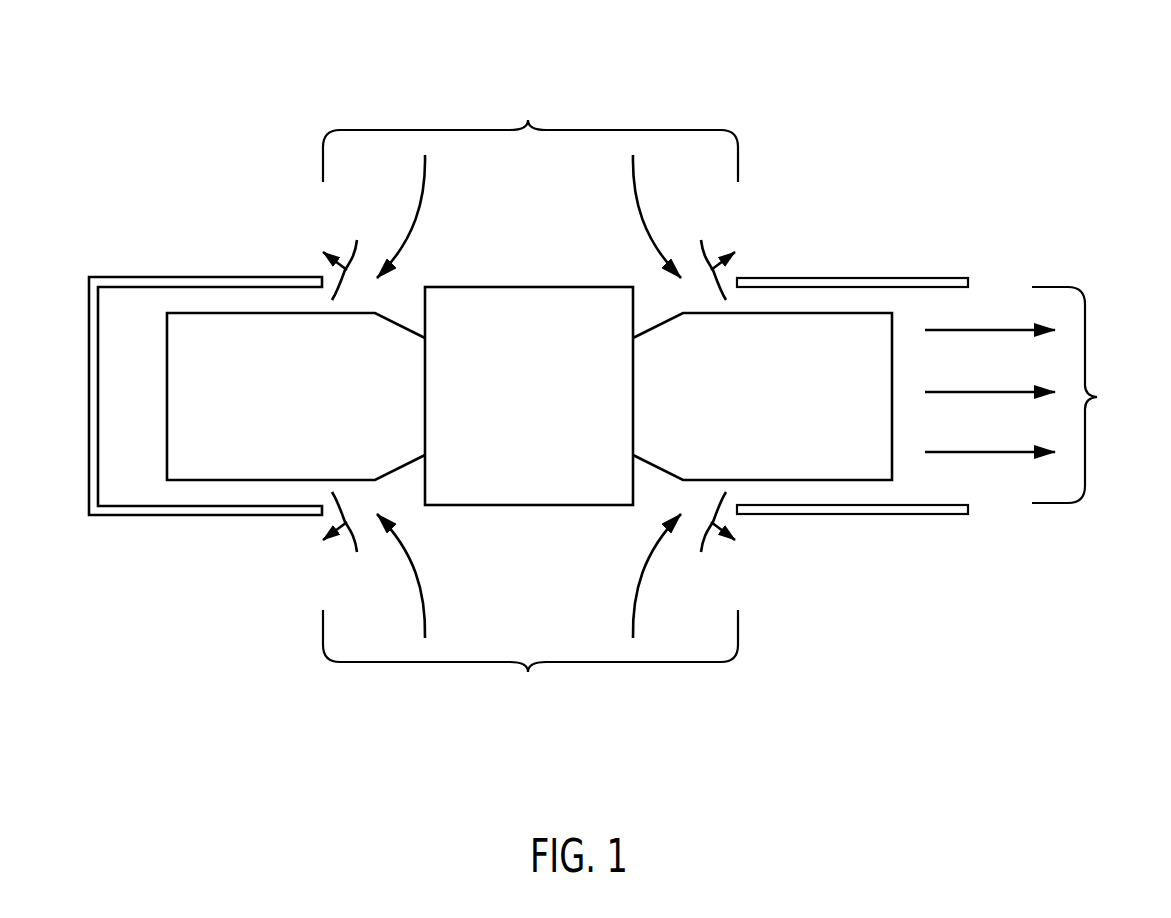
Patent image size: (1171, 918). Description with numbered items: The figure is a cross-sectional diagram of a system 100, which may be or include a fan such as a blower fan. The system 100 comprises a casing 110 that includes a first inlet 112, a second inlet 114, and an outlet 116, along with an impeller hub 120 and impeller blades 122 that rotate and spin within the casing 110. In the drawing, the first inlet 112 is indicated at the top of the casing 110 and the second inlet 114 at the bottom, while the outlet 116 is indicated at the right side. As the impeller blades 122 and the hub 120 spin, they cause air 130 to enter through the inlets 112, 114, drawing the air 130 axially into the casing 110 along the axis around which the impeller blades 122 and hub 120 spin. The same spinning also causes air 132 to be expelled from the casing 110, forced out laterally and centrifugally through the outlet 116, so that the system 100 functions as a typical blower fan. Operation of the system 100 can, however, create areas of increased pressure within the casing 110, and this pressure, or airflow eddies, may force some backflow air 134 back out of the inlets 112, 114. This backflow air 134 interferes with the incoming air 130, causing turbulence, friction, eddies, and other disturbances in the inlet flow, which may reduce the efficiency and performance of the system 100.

The system 100 is at (165, 89).
The casing 110 is at (133, 277).
The first inlet 112 is at (528, 120).
The second inlet 114 is at (528, 672).
The outlet 116 is at (1097, 397).
The impeller hub 120 is at (500, 287).
The impeller blades 122 is at (166, 393).
The air 130 is at (427, 181).
The air 132 is at (998, 455).
The backflow air 134 is at (357, 240).